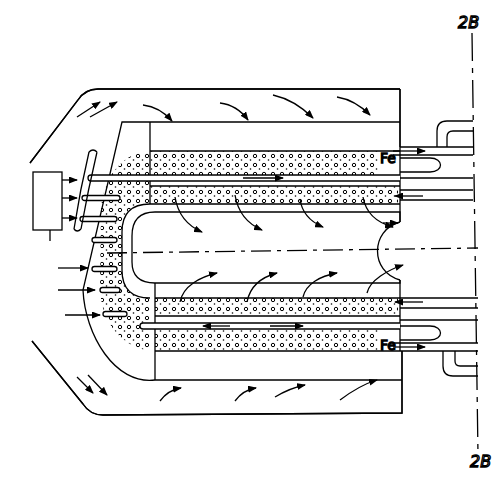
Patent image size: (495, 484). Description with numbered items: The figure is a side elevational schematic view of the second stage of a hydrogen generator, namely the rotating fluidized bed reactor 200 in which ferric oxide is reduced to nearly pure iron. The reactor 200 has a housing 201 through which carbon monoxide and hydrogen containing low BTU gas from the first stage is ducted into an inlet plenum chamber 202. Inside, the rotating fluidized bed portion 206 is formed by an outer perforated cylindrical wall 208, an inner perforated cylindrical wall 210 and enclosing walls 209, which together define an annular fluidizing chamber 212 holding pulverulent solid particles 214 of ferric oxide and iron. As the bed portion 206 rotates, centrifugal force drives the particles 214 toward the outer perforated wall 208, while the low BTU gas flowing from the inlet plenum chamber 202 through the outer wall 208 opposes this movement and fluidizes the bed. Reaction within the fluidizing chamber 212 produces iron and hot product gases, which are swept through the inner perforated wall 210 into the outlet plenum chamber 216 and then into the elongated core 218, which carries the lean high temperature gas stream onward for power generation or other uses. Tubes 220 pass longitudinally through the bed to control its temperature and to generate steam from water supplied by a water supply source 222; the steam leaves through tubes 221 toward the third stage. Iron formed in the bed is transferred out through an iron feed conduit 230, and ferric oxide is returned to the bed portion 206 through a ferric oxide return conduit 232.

The rotating fluidized bed reactor 200 is at (168, 86).
The housing 201 is at (345, 87).
The inlet plenum chamber 202 is at (190, 131).
The rotating fluidized bed portion 206 is at (410, 178).
The outer perforated cylindrical wall 208 is at (285, 151).
The enclosing walls 209 is at (147, 124).
The inner perforated cylindrical wall 210 is at (235, 213).
The annular fluidizing chamber 212 is at (320, 213).
The pulverulent solid particles 214 is at (230, 160).
The outlet plenum chamber 216 is at (287, 210).
The core 218 is at (368, 244).
The tubes 220 is at (150, 210).
The tubes 221 is at (455, 119).
The water supply source 222 is at (107, 253).
The iron feed conduit 230 is at (430, 146).
The ferric oxide return conduit 232 is at (452, 200).